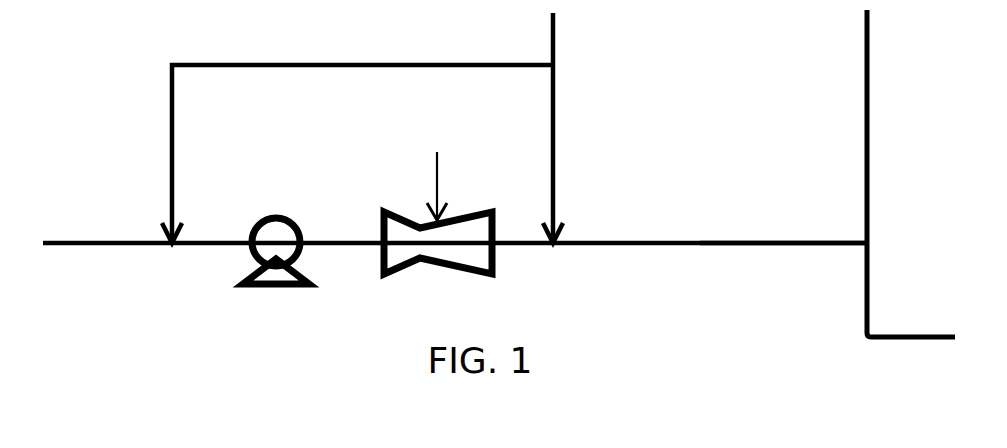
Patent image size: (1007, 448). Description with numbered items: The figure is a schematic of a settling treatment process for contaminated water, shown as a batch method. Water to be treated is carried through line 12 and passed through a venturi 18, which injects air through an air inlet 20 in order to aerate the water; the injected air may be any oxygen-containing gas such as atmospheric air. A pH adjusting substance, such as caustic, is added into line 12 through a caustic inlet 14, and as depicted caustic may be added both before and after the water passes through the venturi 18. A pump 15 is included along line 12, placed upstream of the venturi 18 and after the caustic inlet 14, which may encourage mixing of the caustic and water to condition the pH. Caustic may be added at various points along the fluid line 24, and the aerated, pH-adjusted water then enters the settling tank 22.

The line 12 is at (117, 245).
The caustic inlet 14 is at (555, 28).
The pump 15 is at (272, 288).
The venturi 18 is at (403, 276).
The air inlet 20 is at (437, 157).
The settling tank 22 is at (865, 157).
The fluid line 24 is at (837, 246).